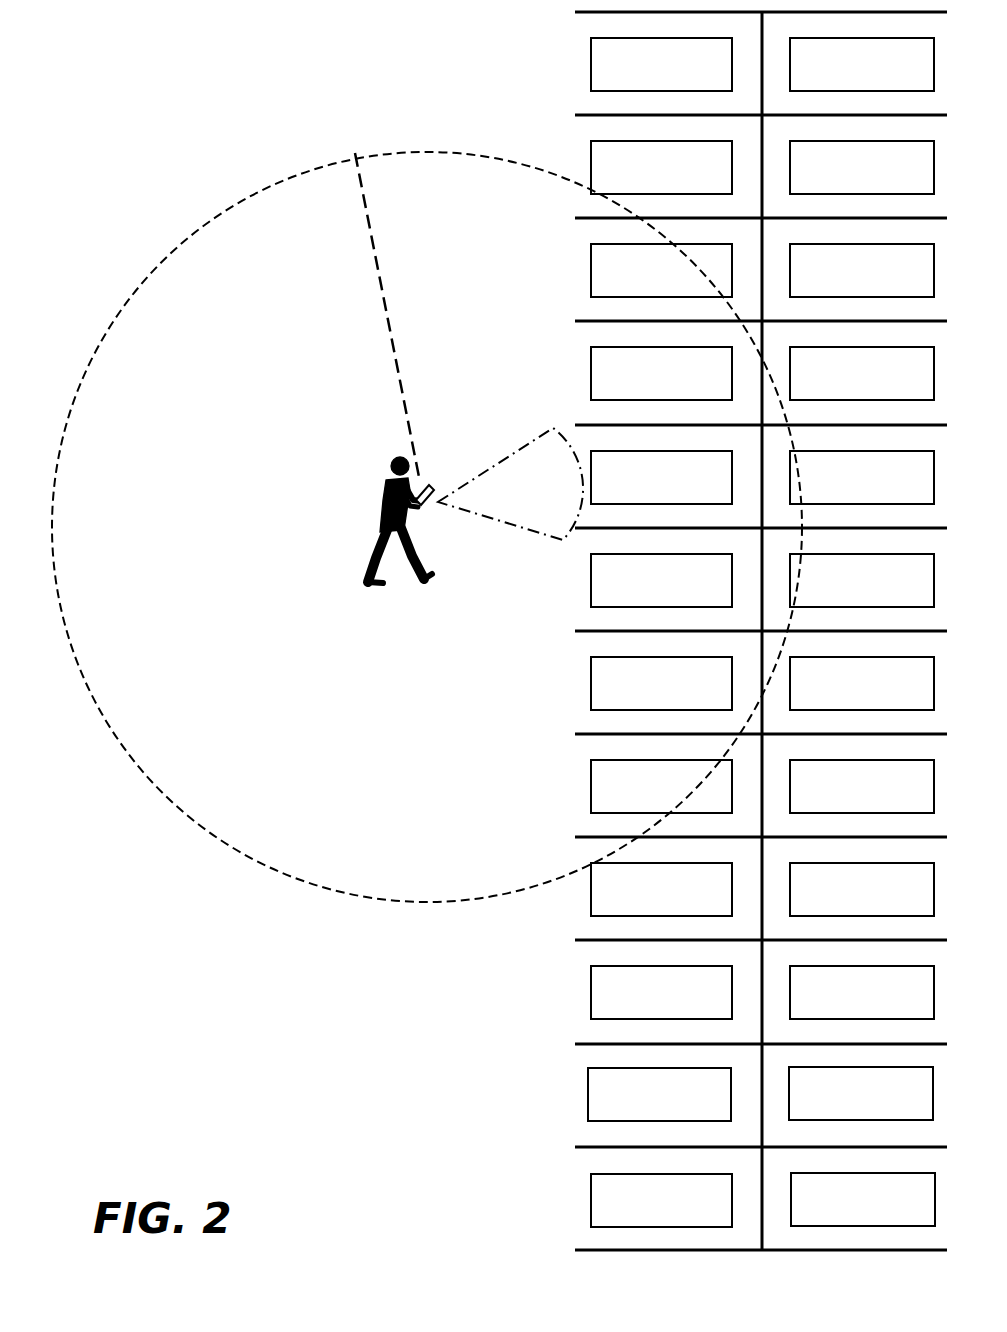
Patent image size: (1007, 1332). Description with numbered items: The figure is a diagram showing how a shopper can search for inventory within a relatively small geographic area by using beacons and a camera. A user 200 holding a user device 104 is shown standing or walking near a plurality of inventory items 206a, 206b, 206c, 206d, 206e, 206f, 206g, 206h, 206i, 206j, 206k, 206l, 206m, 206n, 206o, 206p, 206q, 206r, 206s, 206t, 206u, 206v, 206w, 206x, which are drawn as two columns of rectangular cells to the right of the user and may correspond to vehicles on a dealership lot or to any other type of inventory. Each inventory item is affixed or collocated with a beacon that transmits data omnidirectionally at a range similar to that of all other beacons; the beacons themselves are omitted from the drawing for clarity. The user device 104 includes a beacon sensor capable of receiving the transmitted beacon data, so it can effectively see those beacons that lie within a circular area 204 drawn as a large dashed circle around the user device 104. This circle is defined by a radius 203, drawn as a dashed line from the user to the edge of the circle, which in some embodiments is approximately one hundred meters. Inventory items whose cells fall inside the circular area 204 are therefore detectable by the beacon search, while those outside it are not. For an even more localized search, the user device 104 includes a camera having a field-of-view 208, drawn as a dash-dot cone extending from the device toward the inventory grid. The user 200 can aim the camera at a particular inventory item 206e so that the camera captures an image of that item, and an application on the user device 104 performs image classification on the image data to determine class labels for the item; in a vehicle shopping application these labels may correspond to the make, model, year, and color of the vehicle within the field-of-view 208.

The user 200 is at (386, 488).
The user device 104 is at (432, 502).
The radius 203 is at (380, 262).
The circular area 204 is at (215, 218).
The field-of-view 208 is at (507, 452).
The inventory item 206a is at (633, 80).
The inventory item 206b is at (633, 183).
The inventory item 206c is at (633, 286).
The inventory item 206d is at (633, 389).
The inventory item 206e is at (633, 493).
The inventory item 206f is at (636, 596).
The inventory item 206g is at (633, 699).
The inventory item 206h is at (633, 802).
The inventory item 206i is at (637, 905).
The inventory item 206j is at (637, 1008).
The inventory item 206k is at (631, 1110).
The inventory item 206l is at (637, 1216).
The inventory item 206m is at (832, 80).
The inventory item 206n is at (834, 183).
The inventory item 206o is at (834, 286).
The inventory item 206p is at (834, 389).
The inventory item 206q is at (834, 493).
The inventory item 206r is at (836, 596).
The inventory item 206s is at (835, 699).
The inventory item 206t is at (837, 802).
The inventory item 206u is at (834, 905).
The inventory item 206v is at (834, 1008).
The inventory item 206w is at (831, 1109).
The inventory item 206x is at (835, 1215).